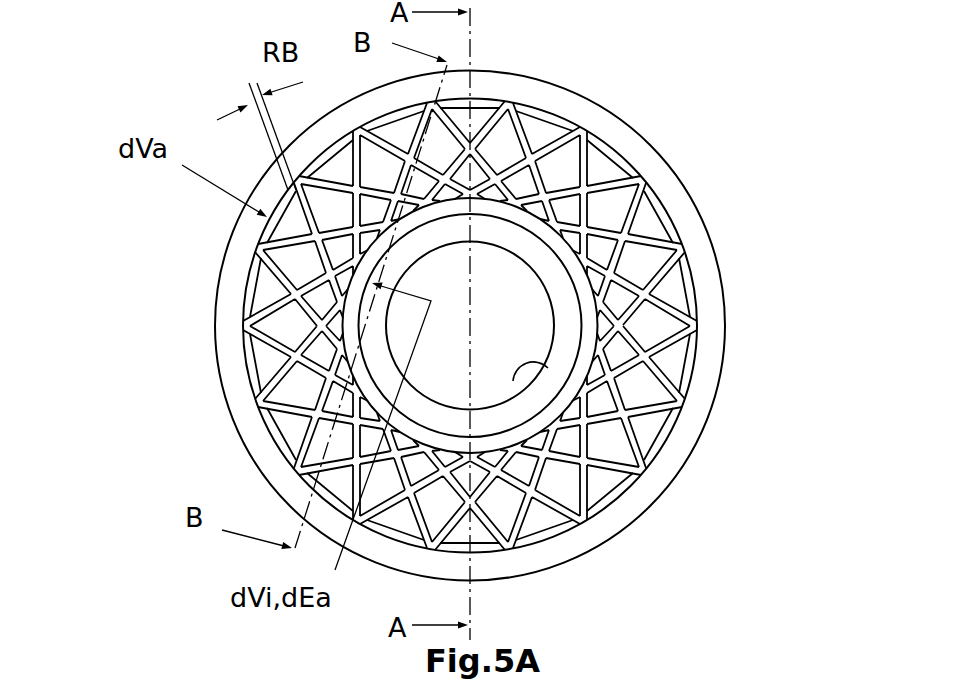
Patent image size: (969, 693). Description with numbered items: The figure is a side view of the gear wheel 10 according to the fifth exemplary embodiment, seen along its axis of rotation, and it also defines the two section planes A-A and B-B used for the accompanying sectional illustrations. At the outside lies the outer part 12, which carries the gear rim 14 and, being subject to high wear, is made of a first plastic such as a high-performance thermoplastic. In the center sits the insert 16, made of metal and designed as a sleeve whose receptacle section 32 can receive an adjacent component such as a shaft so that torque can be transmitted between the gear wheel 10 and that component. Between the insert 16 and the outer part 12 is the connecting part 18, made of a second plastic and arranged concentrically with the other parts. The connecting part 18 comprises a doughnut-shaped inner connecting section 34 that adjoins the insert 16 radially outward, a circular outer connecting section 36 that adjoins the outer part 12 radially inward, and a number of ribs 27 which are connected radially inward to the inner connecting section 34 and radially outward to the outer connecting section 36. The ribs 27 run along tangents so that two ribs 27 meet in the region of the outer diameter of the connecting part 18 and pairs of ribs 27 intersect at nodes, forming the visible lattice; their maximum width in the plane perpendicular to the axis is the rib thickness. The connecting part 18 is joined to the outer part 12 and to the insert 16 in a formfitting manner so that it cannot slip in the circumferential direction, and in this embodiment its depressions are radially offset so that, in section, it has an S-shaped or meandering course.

The gear wheel 10 is at (126, 84).
The outer part 12 is at (633, 150).
The gear rim 14 is at (470, 324).
The insert 16 is at (567, 331).
The connecting part 18 is at (667, 295).
The ribs 27 is at (470, 325).
The receptacle section 32 is at (514, 381).
The inner connecting section 34 is at (590, 340).
The outer connecting section 36 is at (693, 383).